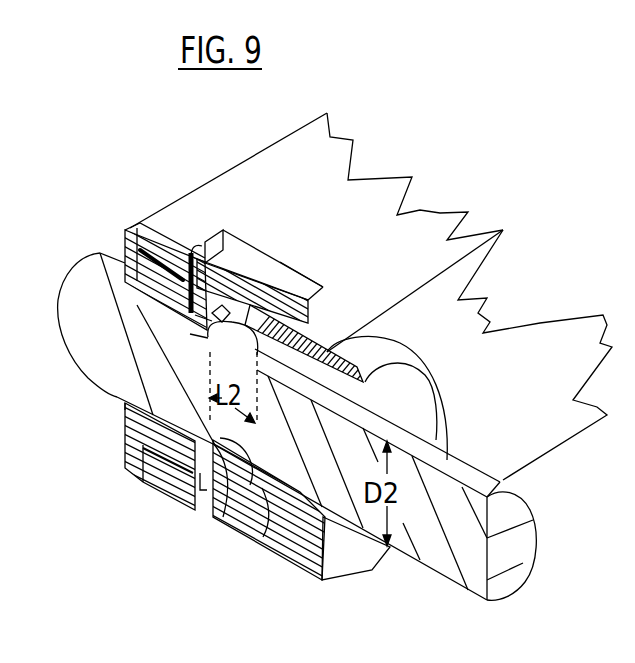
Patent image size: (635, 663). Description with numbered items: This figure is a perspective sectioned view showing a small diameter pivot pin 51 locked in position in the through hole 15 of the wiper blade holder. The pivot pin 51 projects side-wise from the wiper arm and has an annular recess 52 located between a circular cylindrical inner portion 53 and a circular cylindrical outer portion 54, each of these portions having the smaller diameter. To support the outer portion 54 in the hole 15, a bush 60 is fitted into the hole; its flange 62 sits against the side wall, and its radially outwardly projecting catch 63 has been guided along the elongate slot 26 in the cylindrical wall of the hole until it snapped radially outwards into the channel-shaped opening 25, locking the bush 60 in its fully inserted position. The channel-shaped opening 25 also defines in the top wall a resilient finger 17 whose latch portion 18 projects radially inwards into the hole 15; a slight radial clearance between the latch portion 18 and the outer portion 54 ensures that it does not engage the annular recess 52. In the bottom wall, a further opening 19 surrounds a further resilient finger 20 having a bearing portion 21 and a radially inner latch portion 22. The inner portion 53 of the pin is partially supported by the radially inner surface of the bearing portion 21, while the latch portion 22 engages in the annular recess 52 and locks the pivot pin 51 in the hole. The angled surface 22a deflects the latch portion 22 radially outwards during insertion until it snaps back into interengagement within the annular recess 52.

The through hole 15 is at (412, 403).
The inner portion 53 is at (453, 467).
The angled surface 22a is at (387, 340).
The outer portion 54 is at (100, 383).
The pivot pin 51 is at (510, 513).
The elongate slot 26 is at (158, 230).
The catch 63 is at (190, 253).
The channel-shaped opening 25 is at (210, 241).
The resilient finger 17 is at (233, 267).
The latch portion 18 is at (283, 263).
The annular recess 52 is at (320, 300).
The bush 60 is at (118, 423).
The flange 62 is at (125, 470).
The further opening 19 is at (187, 500).
The further resilient finger 20 is at (230, 527).
The latch portion 22 is at (213, 523).
The bearing portion 21 is at (262, 543).